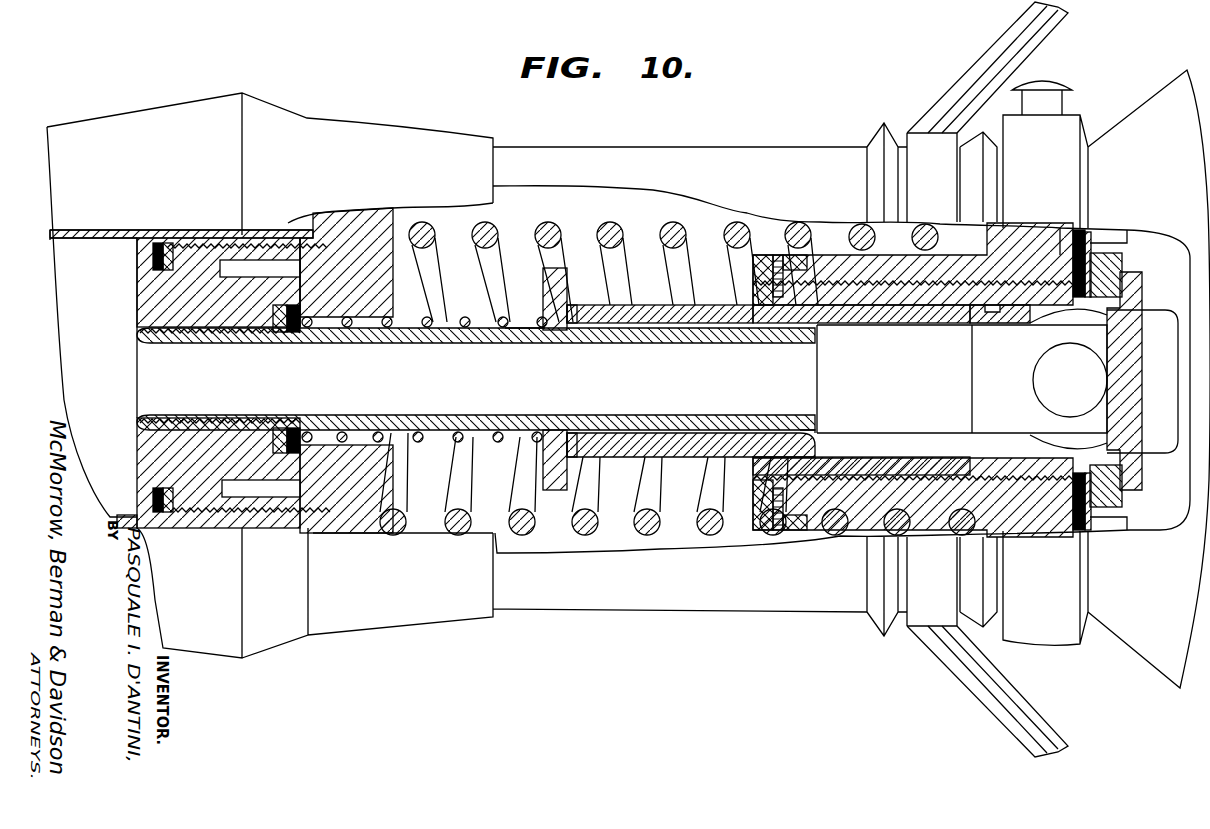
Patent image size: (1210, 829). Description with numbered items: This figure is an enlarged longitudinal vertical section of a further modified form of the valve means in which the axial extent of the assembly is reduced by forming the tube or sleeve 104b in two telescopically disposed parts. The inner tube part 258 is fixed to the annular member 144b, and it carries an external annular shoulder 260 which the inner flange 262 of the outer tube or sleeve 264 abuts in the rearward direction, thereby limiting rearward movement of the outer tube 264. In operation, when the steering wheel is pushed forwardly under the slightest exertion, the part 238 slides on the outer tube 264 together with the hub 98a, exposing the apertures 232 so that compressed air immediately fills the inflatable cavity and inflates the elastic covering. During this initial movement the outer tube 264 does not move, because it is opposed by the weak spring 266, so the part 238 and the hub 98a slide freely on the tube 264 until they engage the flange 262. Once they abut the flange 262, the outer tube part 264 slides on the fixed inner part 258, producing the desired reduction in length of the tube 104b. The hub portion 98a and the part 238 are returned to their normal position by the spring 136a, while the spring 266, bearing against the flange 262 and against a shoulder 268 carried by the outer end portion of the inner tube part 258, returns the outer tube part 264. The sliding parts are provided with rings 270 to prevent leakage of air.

The hub 98a is at (918, 273).
The tube or sleeve 104b is at (713, 377).
The spring 136a is at (740, 232).
The annular member 144b is at (217, 322).
The apertures 232 is at (1052, 323).
The part 238 is at (878, 307).
The inner tube part 258 is at (538, 338).
The external annular shoulder 260 is at (573, 328).
The inner flange 262 is at (556, 268).
The outer tube or sleeve 264 is at (645, 305).
The spring 266 is at (468, 328).
The shoulder 268 is at (307, 420).
The rings 270 is at (798, 423).